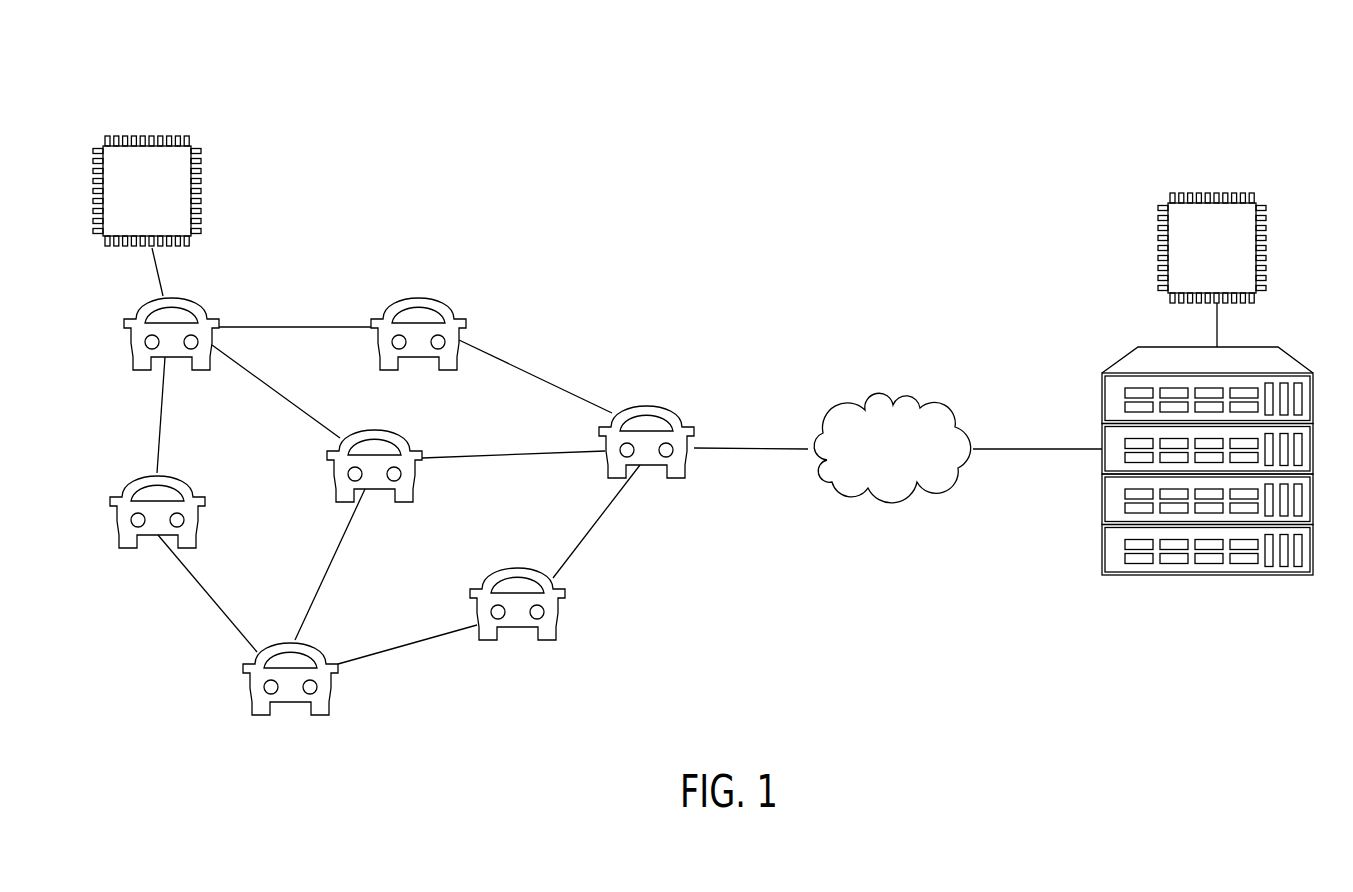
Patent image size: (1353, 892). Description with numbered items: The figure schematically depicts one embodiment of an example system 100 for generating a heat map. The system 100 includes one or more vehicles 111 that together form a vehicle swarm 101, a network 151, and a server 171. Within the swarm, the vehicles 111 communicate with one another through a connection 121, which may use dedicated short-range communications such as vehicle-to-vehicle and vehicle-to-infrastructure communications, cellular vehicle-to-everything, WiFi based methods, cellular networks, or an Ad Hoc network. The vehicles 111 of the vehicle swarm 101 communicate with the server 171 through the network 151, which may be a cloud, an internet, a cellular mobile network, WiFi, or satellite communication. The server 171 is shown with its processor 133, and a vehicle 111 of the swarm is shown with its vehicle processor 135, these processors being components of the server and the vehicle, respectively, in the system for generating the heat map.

The system 100 is at (703, 388).
The vehicle swarm 101 is at (393, 425).
The vehicle 111 is at (418, 295).
The connection 121 is at (285, 327).
The processor 133 is at (1234, 263).
The vehicle processor 135 is at (166, 210).
The network 151 is at (909, 463).
The server 171 is at (1122, 359).